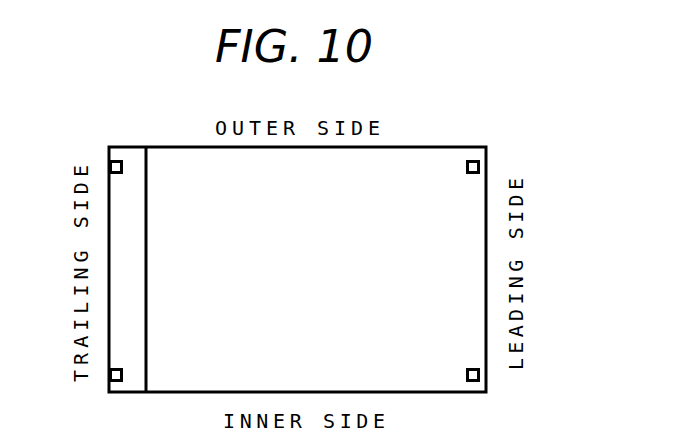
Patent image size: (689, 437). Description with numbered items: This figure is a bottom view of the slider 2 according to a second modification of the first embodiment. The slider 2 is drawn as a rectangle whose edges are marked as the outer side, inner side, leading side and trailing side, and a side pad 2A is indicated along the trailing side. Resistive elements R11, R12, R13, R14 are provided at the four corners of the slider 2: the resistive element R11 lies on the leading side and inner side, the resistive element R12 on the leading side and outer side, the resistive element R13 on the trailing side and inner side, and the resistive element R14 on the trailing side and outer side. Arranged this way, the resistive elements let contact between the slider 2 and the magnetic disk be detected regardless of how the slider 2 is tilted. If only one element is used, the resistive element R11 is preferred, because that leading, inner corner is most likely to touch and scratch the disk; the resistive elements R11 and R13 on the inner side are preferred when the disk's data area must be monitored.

The slider 2 is at (420, 147).
The side pad 2A is at (135, 147).
The resistive element R11 is at (479, 375).
The resistive element R12 is at (479, 166).
The resistive element R13 is at (110, 375).
The resistive element R14 is at (110, 166).